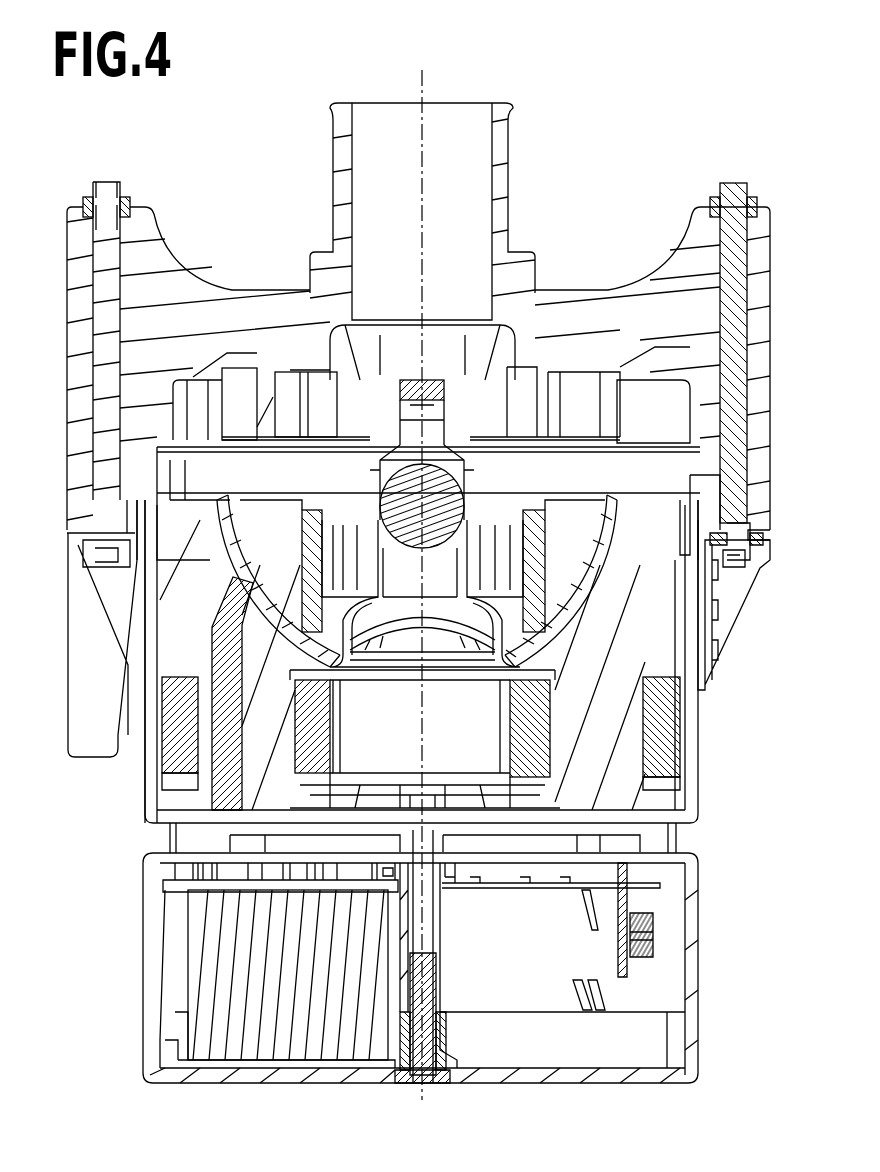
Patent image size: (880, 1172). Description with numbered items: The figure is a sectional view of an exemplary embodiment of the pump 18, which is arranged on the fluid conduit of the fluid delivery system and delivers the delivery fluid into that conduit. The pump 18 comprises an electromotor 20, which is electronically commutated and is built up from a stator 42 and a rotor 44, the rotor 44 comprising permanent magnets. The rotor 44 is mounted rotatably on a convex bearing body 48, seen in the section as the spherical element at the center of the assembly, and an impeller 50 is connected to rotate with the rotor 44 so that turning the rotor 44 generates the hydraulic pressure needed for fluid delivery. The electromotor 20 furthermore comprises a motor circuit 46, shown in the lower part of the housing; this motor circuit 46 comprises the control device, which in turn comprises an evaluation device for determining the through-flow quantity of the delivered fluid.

The pump 18 is at (662, 140).
The electromotor 20 is at (598, 712).
The stator 42 is at (258, 766).
The rotor 44 is at (540, 500).
The motor circuit 46 is at (238, 943).
The convex bearing body 48 is at (462, 440).
The impeller 50 is at (263, 377).